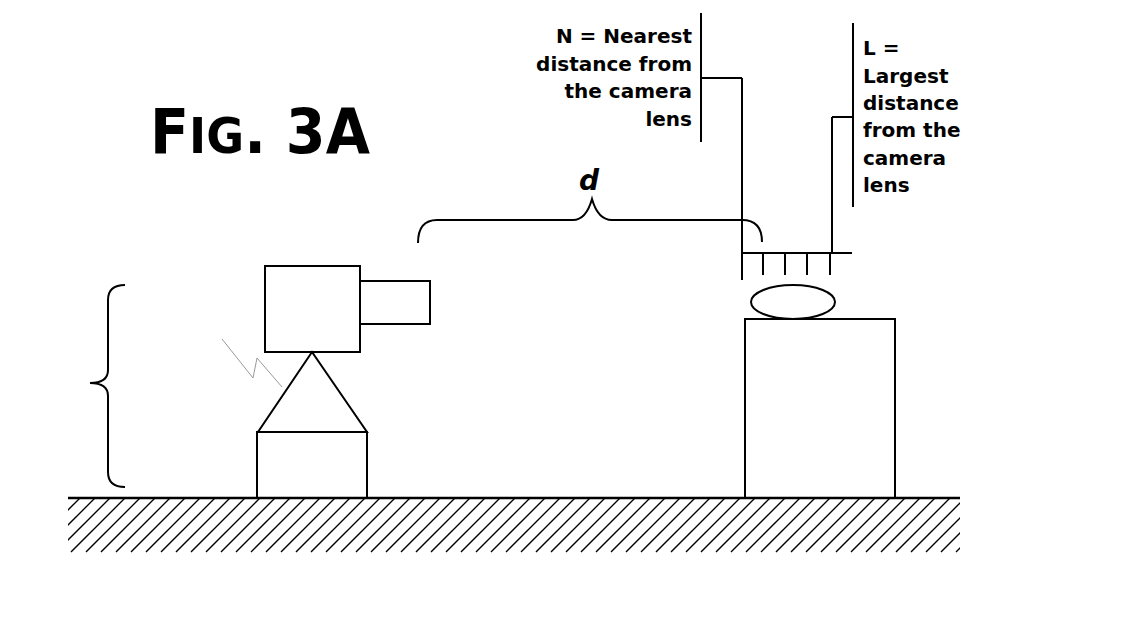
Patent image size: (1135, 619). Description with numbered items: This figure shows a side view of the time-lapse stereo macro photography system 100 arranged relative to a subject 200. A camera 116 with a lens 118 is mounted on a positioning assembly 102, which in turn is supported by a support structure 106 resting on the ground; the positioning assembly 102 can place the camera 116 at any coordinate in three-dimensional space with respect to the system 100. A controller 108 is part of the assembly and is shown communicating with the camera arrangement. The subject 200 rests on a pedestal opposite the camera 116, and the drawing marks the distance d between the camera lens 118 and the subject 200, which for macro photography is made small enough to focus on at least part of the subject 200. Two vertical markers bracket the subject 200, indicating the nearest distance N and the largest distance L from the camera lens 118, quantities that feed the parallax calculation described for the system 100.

The system 100 is at (90, 379).
The positioning assembly 102 is at (288, 419).
The support structure 106 is at (288, 481).
The controller 108 is at (151, 354).
The camera 116 is at (288, 324).
The lens 118 is at (364, 316).
The subject 200 is at (832, 302).